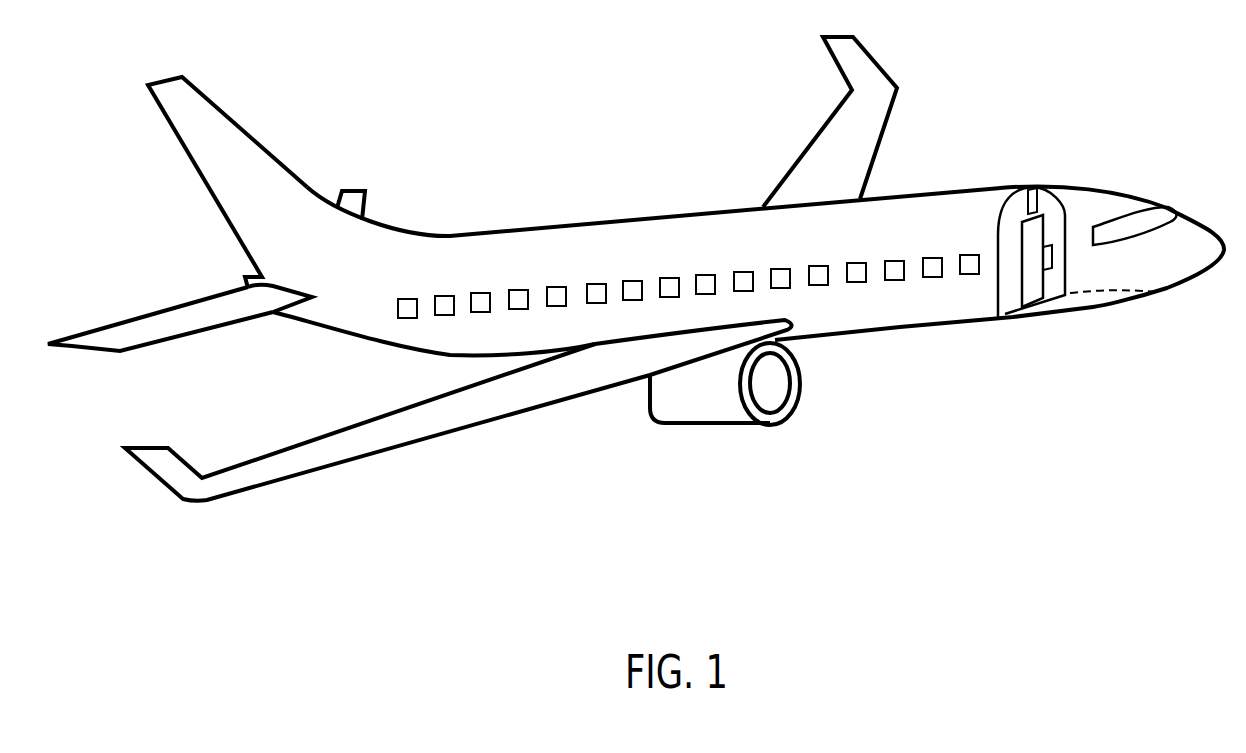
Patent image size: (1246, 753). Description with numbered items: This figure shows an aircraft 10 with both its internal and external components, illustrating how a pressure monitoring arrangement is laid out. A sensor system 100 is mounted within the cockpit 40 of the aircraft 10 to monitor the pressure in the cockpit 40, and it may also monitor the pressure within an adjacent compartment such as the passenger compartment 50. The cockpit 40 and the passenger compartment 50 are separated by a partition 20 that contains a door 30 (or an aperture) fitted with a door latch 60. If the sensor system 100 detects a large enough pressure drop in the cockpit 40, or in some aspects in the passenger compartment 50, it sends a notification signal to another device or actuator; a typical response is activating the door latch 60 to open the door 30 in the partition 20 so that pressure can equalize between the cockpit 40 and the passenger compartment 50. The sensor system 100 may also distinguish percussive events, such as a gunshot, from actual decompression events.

The aircraft 10 is at (528, 108).
The partition 20 is at (998, 237).
The door 30 is at (1022, 272).
The cockpit 40 is at (1105, 202).
The passenger compartment 50 is at (547, 247).
The door latch 60 is at (1052, 252).
The sensor system 100 is at (1040, 172).